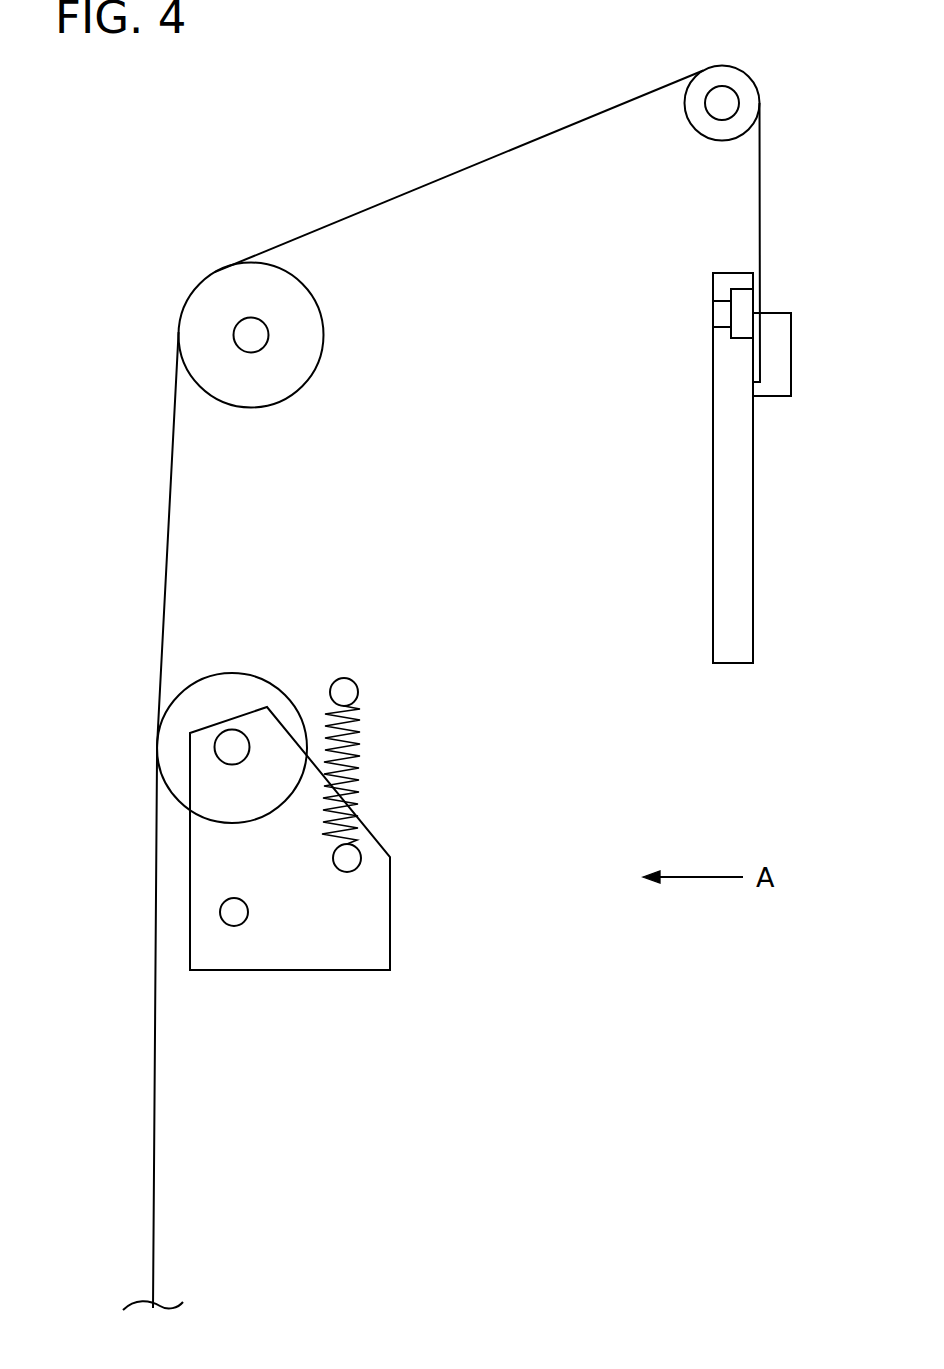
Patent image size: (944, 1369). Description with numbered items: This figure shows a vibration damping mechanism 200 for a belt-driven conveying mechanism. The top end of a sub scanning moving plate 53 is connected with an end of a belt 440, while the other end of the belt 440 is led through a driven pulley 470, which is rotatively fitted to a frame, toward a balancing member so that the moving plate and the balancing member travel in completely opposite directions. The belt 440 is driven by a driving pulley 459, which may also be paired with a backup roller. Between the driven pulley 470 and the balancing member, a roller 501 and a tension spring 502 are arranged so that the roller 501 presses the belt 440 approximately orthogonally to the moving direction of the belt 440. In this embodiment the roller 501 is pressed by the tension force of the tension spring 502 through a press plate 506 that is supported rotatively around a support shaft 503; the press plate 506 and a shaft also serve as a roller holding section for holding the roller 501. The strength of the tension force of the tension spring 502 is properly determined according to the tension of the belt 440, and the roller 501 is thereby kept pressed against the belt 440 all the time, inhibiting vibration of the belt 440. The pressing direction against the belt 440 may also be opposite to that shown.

The belt 440 is at (173, 497).
The driving pulley 459 is at (706, 140).
The driven pulley 470 is at (324, 335).
The sub scanning moving plate 53 is at (712, 492).
The roller 501 is at (262, 673).
The tension spring 502 is at (360, 752).
The support shaft 503 is at (234, 926).
The press plate 506 is at (361, 924).
The vibration damping mechanism 200 is at (515, 808).